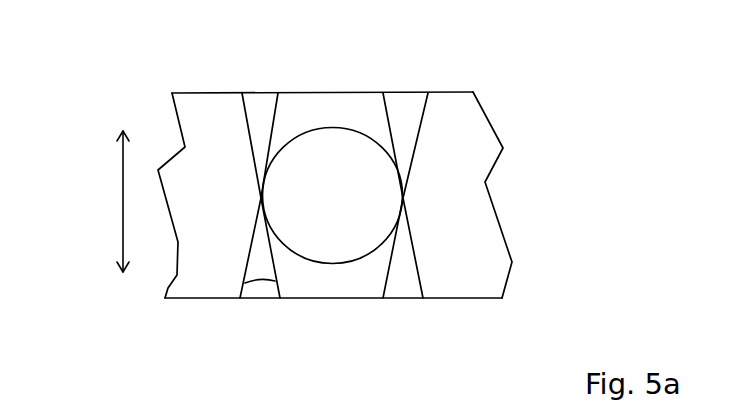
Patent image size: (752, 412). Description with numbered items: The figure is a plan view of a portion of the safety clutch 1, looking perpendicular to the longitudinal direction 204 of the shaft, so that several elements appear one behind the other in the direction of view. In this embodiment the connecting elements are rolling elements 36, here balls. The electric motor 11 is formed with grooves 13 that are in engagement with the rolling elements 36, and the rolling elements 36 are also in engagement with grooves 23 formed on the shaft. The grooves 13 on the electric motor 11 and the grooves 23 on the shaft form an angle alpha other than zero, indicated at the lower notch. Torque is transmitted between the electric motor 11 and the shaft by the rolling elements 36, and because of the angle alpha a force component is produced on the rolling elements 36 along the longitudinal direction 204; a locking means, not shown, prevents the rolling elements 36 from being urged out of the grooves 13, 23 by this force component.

The safety clutch 1 is at (560, 164).
The electric motor 11 is at (468, 135).
The grooves 13 is at (401, 108).
The grooves 23 is at (263, 112).
The rolling elements 36 is at (320, 178).
The longitudinal direction 204 is at (122, 203).